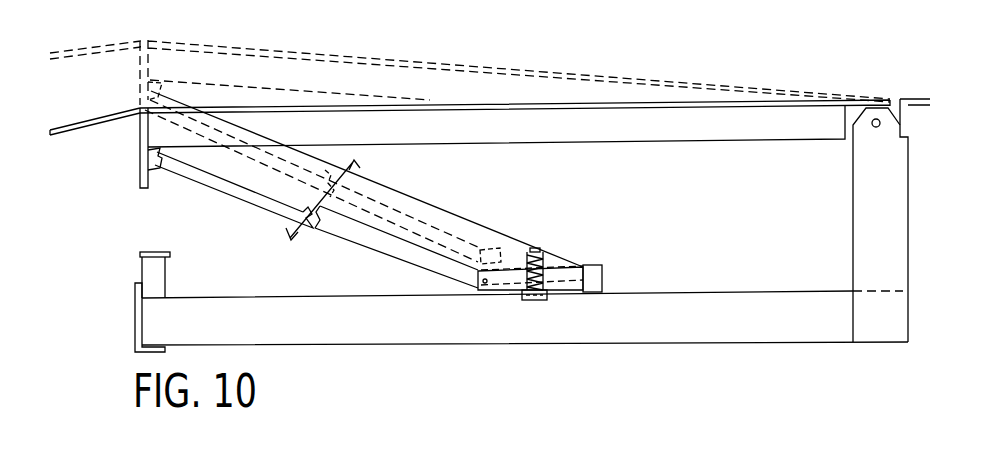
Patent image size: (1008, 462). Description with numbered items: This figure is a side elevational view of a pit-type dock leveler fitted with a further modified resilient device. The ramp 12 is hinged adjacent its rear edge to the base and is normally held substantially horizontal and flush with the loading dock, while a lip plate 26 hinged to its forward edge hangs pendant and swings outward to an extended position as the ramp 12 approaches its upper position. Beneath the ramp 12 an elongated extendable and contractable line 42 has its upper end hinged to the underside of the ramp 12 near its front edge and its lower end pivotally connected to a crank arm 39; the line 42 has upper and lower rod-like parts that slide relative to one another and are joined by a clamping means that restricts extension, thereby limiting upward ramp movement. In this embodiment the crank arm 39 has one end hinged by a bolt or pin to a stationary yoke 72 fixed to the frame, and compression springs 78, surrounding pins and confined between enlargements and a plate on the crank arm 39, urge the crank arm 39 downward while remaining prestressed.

The ramp 12 is at (353, 55).
The lip plate 26 is at (98, 124).
The extendable and contractable line 42 is at (367, 247).
The crank arm 39 is at (500, 283).
The stationary yoke 72 is at (594, 277).
The compression springs 78 is at (546, 256).